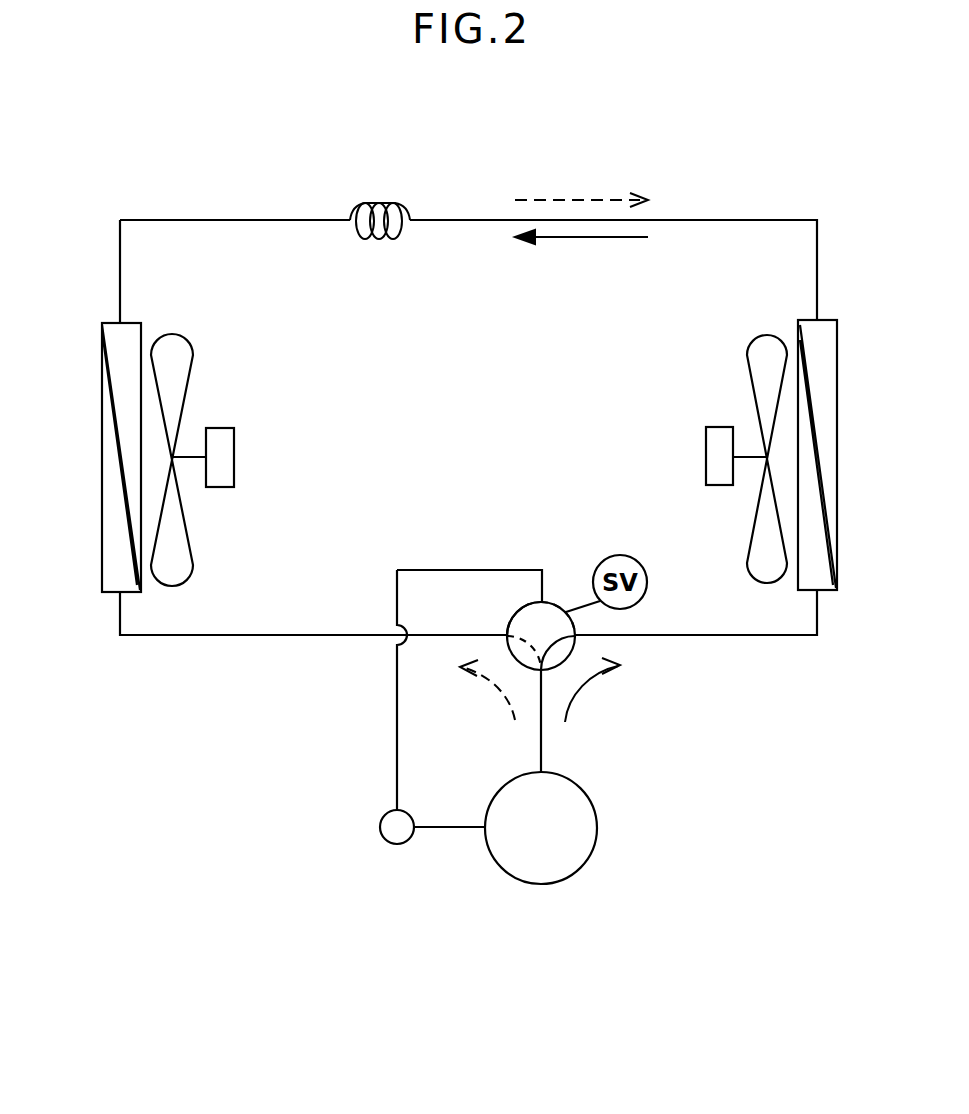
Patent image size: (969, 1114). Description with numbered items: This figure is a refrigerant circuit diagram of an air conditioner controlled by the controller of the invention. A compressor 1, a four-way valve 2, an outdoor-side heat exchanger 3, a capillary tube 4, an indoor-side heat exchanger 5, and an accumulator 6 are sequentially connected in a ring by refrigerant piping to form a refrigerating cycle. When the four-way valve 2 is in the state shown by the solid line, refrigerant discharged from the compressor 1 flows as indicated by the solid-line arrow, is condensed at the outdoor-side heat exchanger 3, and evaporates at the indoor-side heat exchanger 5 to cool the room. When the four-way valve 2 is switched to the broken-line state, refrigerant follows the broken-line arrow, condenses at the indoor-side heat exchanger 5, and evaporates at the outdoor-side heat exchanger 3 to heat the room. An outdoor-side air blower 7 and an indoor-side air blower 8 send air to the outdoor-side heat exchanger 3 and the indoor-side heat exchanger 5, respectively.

The compressor 1 is at (542, 868).
The four-way valve 2 is at (562, 658).
The outdoor-side heat exchanger 3 is at (828, 473).
The capillary tube 4 is at (385, 200).
The indoor-side heat exchanger 5 is at (108, 533).
The accumulator 6 is at (390, 832).
The outdoor-side air blower 7 is at (715, 458).
The indoor-side air blower 8 is at (227, 448).